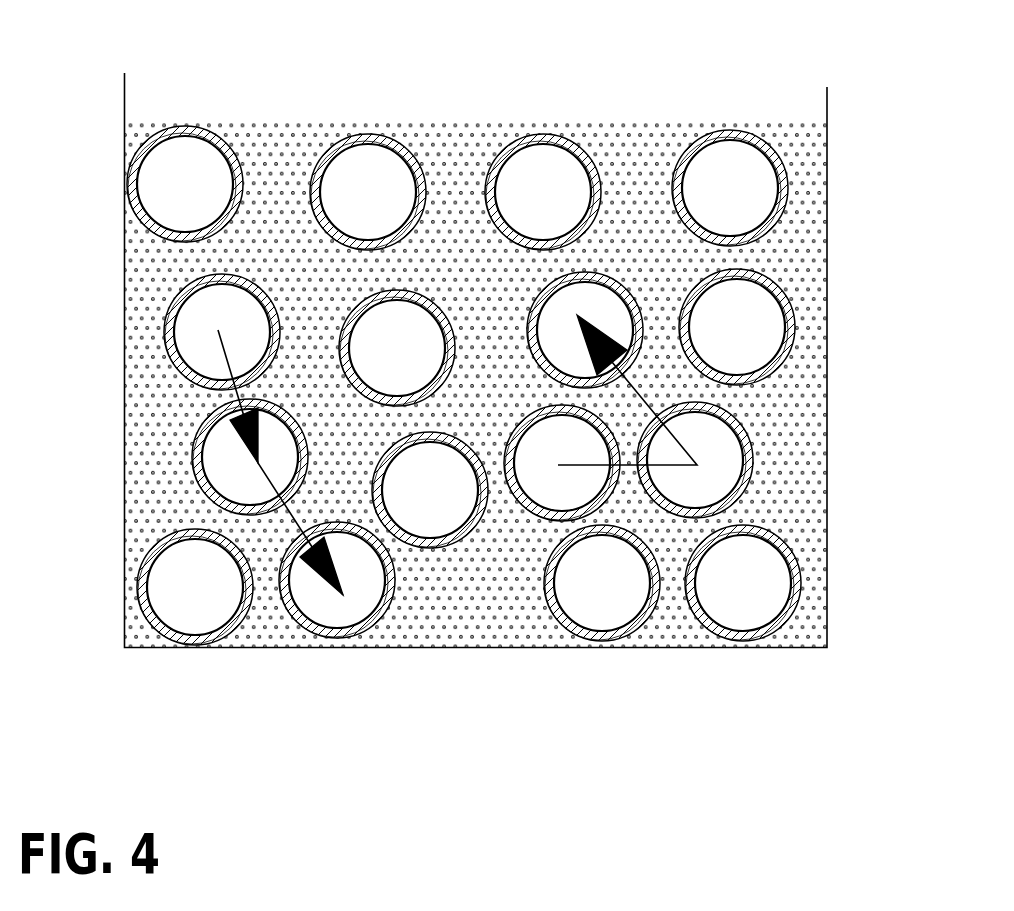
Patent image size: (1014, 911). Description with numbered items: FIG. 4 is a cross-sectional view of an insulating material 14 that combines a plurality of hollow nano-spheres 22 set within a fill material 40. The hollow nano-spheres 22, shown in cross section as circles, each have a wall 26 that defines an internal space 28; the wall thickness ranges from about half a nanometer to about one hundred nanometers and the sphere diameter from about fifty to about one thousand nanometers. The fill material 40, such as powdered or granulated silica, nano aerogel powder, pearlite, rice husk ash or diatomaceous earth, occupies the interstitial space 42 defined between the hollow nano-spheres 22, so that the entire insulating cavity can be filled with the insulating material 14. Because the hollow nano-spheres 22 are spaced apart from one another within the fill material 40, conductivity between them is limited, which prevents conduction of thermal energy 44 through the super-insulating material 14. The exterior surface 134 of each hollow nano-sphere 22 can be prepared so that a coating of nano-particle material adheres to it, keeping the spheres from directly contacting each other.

The insulating material 14 is at (473, 385).
The hollow nano-spheres 22 is at (625, 646).
The wall 26 is at (793, 616).
The internal space 28 is at (751, 581).
The fill material 40 is at (784, 266).
The interstitial space 42 is at (514, 345).
The thermal energy 44 is at (702, 412).
The exterior surface 134 is at (736, 416).